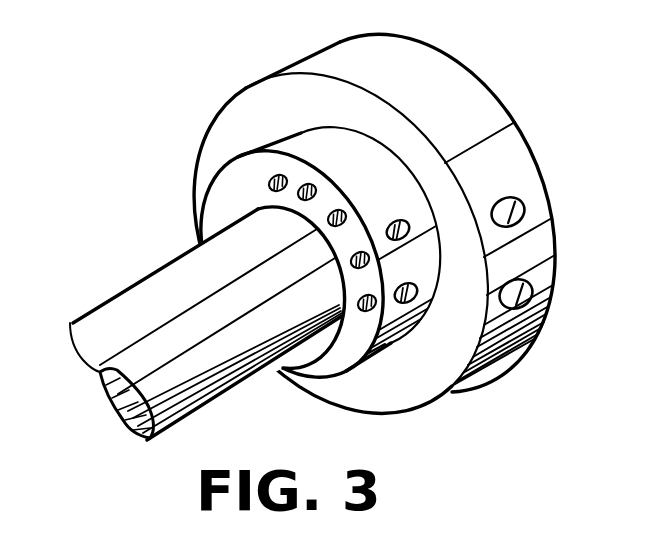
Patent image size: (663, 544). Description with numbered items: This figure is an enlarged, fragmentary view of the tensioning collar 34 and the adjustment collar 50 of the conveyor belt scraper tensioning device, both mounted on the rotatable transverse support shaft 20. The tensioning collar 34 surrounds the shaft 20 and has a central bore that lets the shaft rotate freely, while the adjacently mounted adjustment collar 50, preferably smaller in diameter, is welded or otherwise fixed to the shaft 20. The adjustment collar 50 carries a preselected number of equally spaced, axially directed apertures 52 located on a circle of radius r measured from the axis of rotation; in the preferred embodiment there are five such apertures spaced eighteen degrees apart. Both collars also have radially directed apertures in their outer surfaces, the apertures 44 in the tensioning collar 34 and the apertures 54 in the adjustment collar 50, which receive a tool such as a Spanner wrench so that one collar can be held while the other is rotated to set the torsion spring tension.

The support shaft 20 is at (163, 286).
The tensioning collar 34 is at (438, 80).
The radially-directed aperture 44 is at (506, 222).
The adjustment collar 50 is at (224, 209).
The axially-directed apertures 52 is at (303, 191).
The radially-directed aperture 54 is at (413, 296).